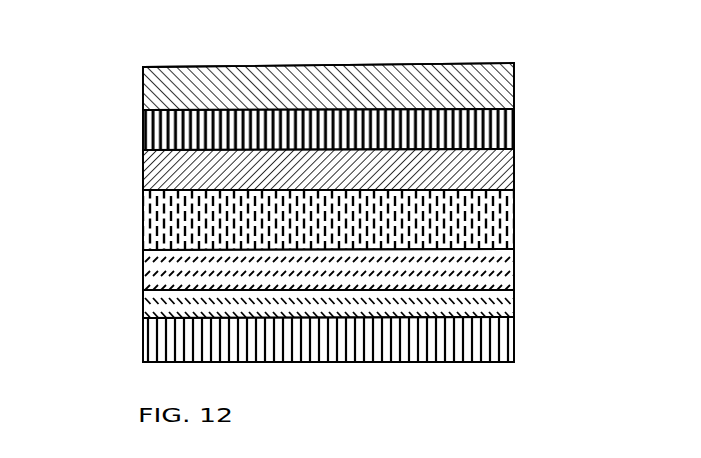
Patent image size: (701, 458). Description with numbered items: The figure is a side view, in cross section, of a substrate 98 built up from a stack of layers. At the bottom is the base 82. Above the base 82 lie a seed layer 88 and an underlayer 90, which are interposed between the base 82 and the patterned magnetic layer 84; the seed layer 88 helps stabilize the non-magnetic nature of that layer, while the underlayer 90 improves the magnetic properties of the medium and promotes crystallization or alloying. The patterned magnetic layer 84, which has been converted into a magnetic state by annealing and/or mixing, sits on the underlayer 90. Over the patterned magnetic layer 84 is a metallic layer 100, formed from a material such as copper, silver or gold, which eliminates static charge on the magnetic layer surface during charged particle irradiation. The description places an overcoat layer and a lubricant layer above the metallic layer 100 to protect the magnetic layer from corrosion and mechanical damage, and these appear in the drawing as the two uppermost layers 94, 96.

The substrate 98 is at (90, 88).
The top layer 96 is at (514, 83).
The layer 94 is at (514, 124).
The metallic layer 100 is at (514, 165).
The patterned magnetic layer 84 is at (514, 218).
The underlayer 90 is at (514, 262).
The seed layer 88 is at (514, 300).
The base 82 is at (514, 338).